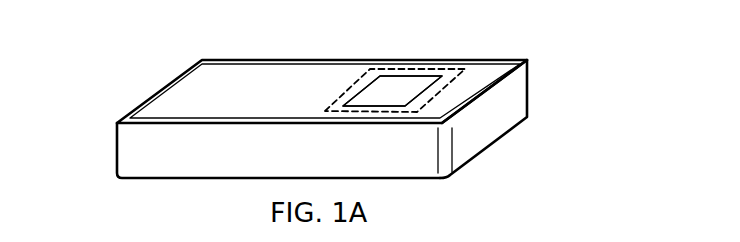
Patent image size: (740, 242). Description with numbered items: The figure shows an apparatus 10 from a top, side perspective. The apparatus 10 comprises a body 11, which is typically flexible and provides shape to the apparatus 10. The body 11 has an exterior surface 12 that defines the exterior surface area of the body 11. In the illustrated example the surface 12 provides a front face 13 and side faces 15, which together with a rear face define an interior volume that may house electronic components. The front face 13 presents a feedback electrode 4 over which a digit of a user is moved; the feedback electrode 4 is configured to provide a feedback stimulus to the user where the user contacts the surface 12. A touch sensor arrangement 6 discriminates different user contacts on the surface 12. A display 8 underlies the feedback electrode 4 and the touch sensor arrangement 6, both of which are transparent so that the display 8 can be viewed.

The apparatus 10 is at (350, 92).
The body 11 is at (116, 133).
The surface 12 is at (518, 62).
The front face 13 is at (253, 57).
The side faces 15 is at (490, 127).
The feedback electrode 4 is at (417, 83).
The touch sensor arrangement 6 is at (356, 86).
The display 8 is at (396, 94).